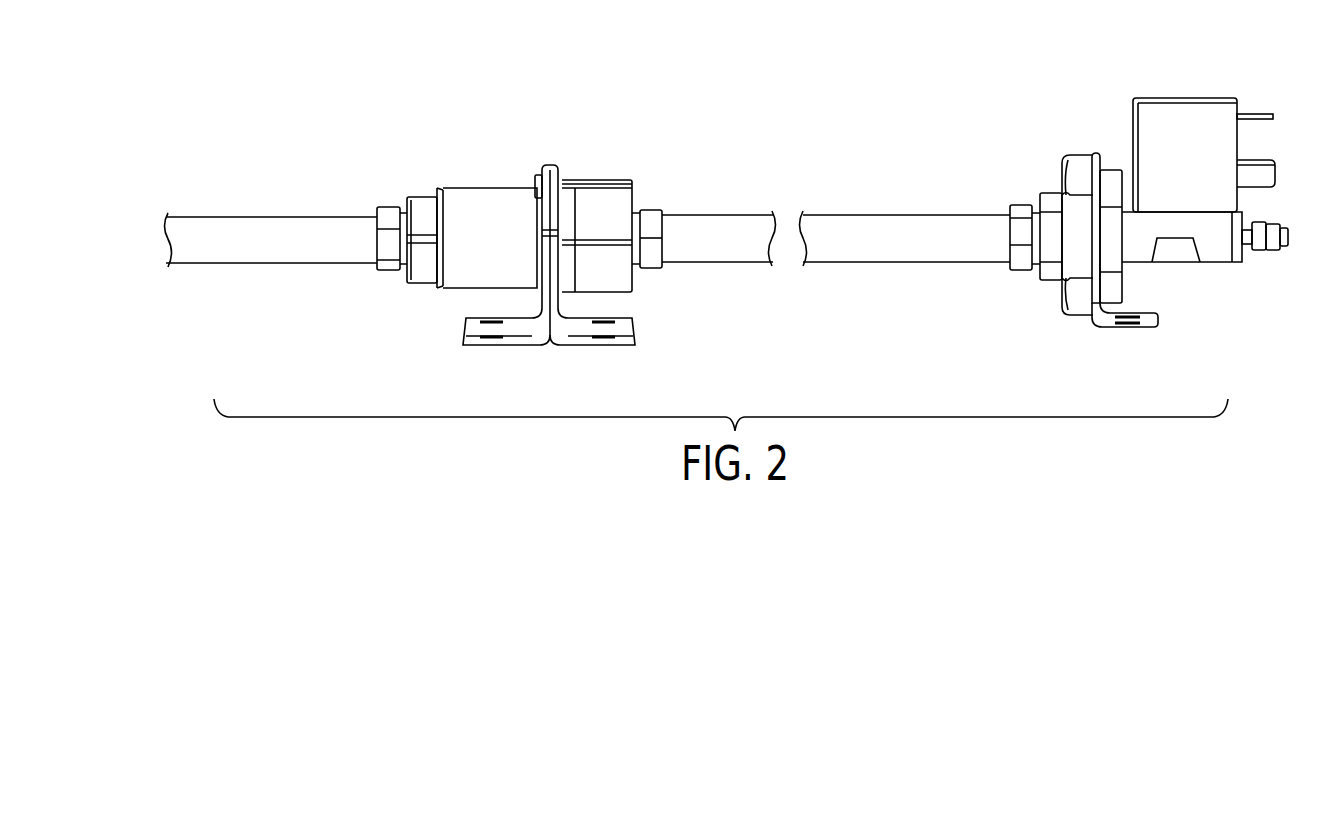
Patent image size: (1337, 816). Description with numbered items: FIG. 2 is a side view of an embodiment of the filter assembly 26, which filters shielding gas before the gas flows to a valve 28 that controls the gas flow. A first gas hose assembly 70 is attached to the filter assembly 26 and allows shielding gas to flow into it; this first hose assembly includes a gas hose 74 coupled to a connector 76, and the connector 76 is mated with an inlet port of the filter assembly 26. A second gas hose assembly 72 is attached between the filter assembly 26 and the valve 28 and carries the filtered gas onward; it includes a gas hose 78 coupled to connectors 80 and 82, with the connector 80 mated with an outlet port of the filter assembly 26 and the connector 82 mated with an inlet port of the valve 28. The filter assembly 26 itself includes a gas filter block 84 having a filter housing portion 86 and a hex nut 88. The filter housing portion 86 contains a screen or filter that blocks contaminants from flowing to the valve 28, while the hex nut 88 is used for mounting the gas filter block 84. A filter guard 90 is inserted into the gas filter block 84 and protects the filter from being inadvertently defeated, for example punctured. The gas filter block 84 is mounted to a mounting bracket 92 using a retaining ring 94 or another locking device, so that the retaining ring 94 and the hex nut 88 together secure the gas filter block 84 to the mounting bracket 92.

The filter assembly 26 is at (494, 110).
The valve 28 is at (1188, 112).
The first gas hose assembly 70 is at (249, 182).
The second gas hose assembly 72 is at (743, 183).
The gas hose 74 is at (291, 228).
The connector 76 is at (404, 208).
The gas hose 78 is at (722, 245).
The connector 80 is at (650, 211).
The connector 82 is at (1018, 205).
The gas filter block 84 is at (514, 196).
The filter housing portion 86 is at (458, 195).
The hex nut 88 is at (585, 197).
The filter guard 90 is at (418, 197).
The mounting bracket 92 is at (558, 300).
The retaining ring 94 is at (540, 233).